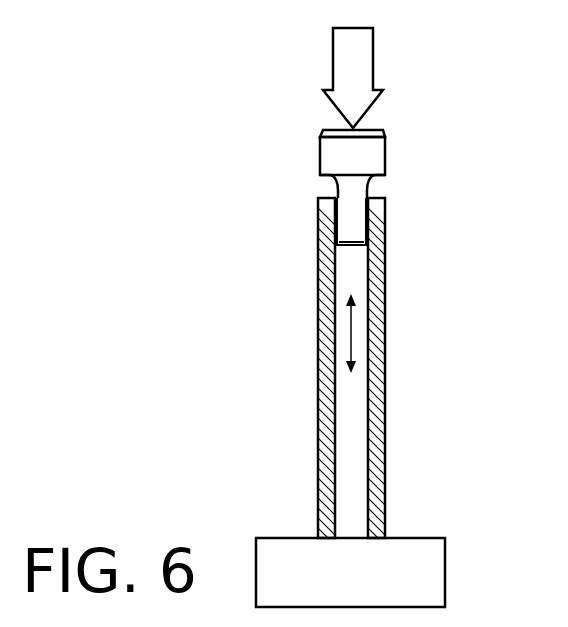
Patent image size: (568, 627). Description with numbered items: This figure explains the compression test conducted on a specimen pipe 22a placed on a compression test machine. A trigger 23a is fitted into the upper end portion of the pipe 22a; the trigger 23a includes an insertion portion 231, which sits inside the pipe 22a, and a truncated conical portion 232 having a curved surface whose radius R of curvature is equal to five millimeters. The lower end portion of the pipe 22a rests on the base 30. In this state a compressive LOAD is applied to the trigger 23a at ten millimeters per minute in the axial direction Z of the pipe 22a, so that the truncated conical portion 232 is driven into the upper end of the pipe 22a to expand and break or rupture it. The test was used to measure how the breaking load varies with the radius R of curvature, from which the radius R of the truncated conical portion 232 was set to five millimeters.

The compressive load LOAD is at (360, 65).
The trigger 23a is at (405, 138).
The truncated conical portion 232 is at (338, 187).
The insertion portion 231 is at (343, 220).
The radius of curvature R is at (388, 188).
The pipe 22a is at (378, 430).
The axial direction Z is at (350, 342).
The base 30 is at (440, 565).